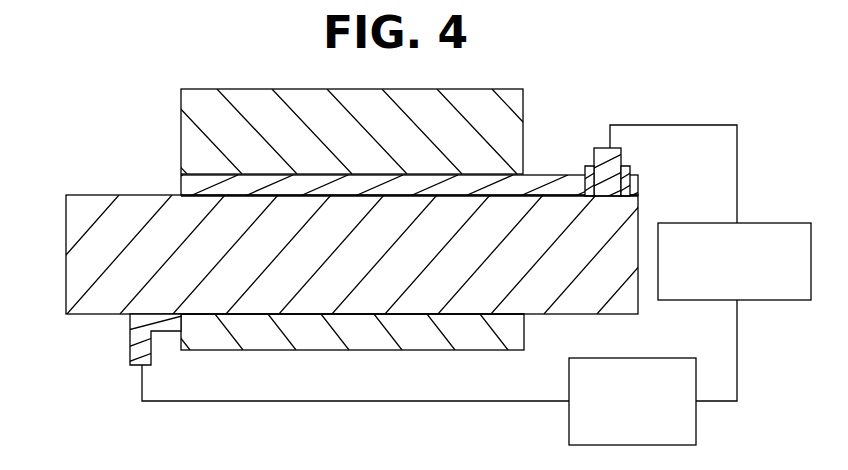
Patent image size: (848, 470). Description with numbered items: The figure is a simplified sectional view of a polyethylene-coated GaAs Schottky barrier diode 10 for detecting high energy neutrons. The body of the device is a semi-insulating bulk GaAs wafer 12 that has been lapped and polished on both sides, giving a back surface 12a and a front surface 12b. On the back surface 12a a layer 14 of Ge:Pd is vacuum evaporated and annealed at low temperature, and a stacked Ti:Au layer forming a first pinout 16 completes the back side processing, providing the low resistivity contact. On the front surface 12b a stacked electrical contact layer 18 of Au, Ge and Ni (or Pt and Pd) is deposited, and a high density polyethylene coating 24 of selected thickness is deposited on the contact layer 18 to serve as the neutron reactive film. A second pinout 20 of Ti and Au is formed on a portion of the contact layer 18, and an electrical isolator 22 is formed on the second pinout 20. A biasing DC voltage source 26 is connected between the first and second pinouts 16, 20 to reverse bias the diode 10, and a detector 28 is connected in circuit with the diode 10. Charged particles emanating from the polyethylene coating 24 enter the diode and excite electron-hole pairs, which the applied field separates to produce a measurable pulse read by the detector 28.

The GaAs diode 10 is at (83, 131).
The GaAs wafer 12 is at (232, 274).
The back surface 12a is at (250, 314).
The front surface 12b is at (247, 196).
The layer of Ge:Pd 14 is at (440, 342).
The first pinout 16 is at (130, 347).
The stacked electrical contact layer 18 is at (180, 187).
The second pinout 20 is at (598, 150).
The electrical isolator 22 is at (632, 180).
The high density polyethylene coating 24 is at (430, 139).
The biasing DC voltage source 26 is at (697, 420).
The detector 28 is at (722, 292).